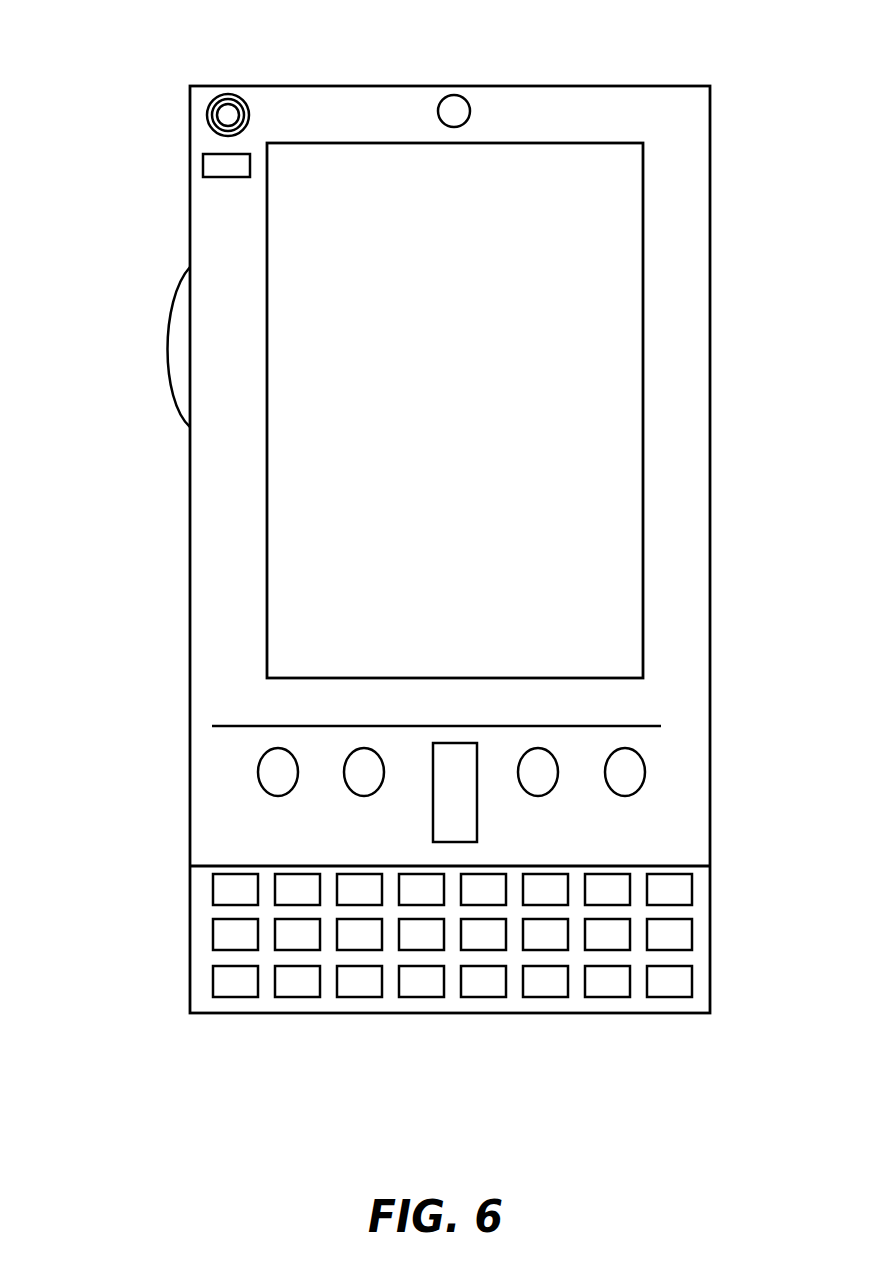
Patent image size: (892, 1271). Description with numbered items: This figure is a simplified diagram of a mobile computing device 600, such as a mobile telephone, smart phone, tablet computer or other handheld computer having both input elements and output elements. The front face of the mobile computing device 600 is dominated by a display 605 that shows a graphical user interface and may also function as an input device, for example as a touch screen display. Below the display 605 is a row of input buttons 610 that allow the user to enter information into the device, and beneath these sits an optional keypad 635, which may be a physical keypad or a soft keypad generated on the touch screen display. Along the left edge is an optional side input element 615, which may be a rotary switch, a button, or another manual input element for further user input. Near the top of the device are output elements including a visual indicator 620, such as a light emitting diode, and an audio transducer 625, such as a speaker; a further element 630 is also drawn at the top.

The mobile computing device 600 is at (698, 105).
The display 605 is at (383, 587).
The input buttons 610 is at (453, 799).
The side input element 615 is at (178, 347).
The visual indicator 620 is at (203, 170).
The audio transducer 625 is at (207, 115).
The speaker 630 is at (466, 108).
The keypad 635 is at (198, 986).